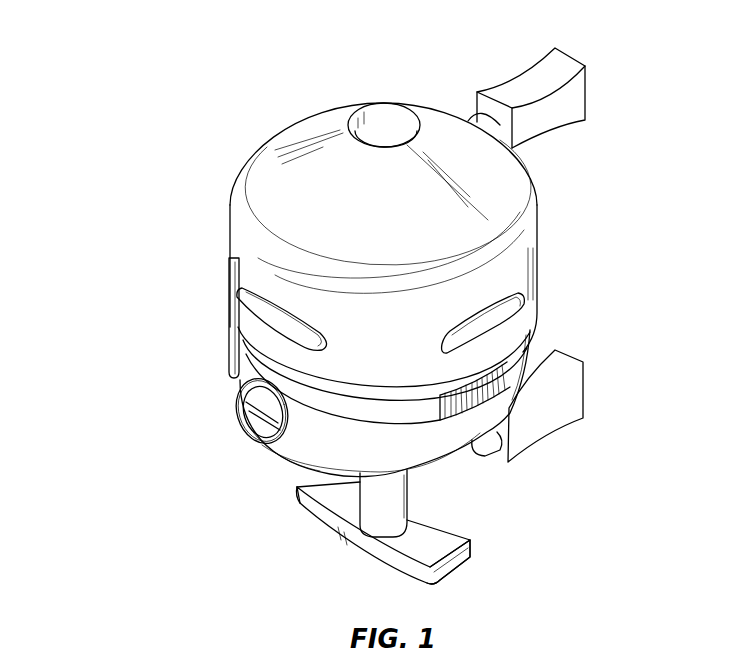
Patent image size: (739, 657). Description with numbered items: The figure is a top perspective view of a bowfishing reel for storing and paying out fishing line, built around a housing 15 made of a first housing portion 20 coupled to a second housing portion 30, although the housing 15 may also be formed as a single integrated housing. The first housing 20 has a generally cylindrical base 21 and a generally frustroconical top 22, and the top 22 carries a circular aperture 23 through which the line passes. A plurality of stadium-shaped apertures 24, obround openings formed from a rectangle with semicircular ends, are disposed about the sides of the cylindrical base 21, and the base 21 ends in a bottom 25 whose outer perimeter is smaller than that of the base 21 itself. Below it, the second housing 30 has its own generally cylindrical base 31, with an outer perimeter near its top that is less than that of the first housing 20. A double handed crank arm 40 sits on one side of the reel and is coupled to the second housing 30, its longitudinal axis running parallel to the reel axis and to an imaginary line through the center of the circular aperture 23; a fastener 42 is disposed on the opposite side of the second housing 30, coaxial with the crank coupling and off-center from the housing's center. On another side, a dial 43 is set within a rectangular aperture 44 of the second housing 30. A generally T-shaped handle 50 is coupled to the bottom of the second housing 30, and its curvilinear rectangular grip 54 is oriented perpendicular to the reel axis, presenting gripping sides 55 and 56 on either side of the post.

The housing 15 is at (144, 186).
The first housing portion 20 is at (537, 220).
The cylindrical base 21 is at (510, 272).
The frustroconical top 22 is at (270, 175).
The circular aperture 23 is at (383, 128).
The stadium-shaped apertures 24 is at (258, 300).
The bottom 25 is at (245, 355).
The second housing portion 30 is at (391, 421).
The cylindrical base 31 is at (313, 422).
The double handed crank arm 40 is at (565, 62).
The fastener 42 is at (260, 422).
The dial 43 is at (518, 403).
The rectangular aperture 44 is at (505, 383).
The handle 50 is at (399, 543).
The rectangular grip 54 is at (363, 548).
The gripping side 55 is at (302, 507).
The gripping side 56 is at (420, 575).